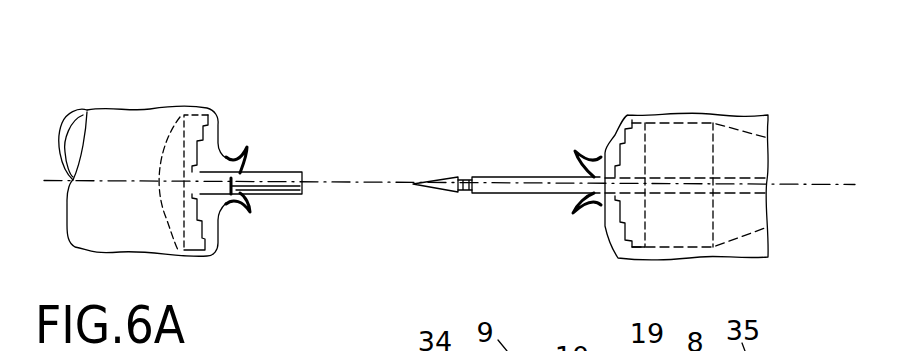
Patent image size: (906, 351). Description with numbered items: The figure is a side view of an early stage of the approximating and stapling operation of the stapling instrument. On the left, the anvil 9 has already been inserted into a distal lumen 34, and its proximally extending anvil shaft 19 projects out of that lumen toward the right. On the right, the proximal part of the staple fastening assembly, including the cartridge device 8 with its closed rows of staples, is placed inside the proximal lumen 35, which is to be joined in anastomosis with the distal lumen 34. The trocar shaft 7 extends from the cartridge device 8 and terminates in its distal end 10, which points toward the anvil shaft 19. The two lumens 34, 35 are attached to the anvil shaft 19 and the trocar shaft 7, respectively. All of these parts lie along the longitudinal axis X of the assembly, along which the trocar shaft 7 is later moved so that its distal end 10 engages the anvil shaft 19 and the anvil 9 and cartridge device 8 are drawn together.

The longitudinal axis X is at (380, 183).
The distal lumen 34 is at (112, 115).
The anvil 9 is at (161, 119).
The anvil shaft 19 is at (250, 145).
The distal end of the trocar shaft 10 is at (428, 183).
The trocar shaft 7 is at (543, 178).
The cartridge device 8 is at (672, 140).
The proximal lumen 35 is at (750, 123).